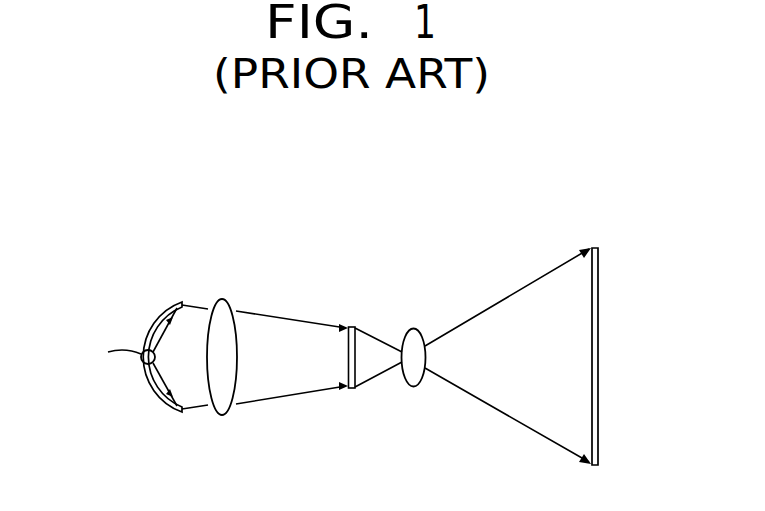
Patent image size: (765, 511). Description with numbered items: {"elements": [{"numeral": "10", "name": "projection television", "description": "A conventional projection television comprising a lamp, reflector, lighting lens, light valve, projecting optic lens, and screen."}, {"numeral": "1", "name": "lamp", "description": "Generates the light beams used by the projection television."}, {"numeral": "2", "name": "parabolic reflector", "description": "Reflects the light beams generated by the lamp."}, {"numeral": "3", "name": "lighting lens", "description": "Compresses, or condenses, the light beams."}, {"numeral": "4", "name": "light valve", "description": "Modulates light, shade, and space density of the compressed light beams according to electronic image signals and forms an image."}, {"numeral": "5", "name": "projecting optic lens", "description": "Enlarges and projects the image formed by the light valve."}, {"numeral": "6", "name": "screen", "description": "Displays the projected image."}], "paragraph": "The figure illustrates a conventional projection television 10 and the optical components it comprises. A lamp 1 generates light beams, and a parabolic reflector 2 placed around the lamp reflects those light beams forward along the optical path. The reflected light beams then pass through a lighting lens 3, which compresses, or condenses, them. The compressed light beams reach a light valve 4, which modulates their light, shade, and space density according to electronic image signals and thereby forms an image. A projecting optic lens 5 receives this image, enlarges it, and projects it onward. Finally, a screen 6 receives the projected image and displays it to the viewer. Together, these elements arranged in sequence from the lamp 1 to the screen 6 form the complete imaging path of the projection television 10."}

The prior art projection optical system 10 is at (142, 196).
The lamp 1 is at (105, 355).
The reflector 2 is at (128, 316).
The condenser lens 3 is at (221, 297).
The light valve / display panel 4 is at (354, 325).
The projection lens 5 is at (415, 327).
The screen 6 is at (596, 362).